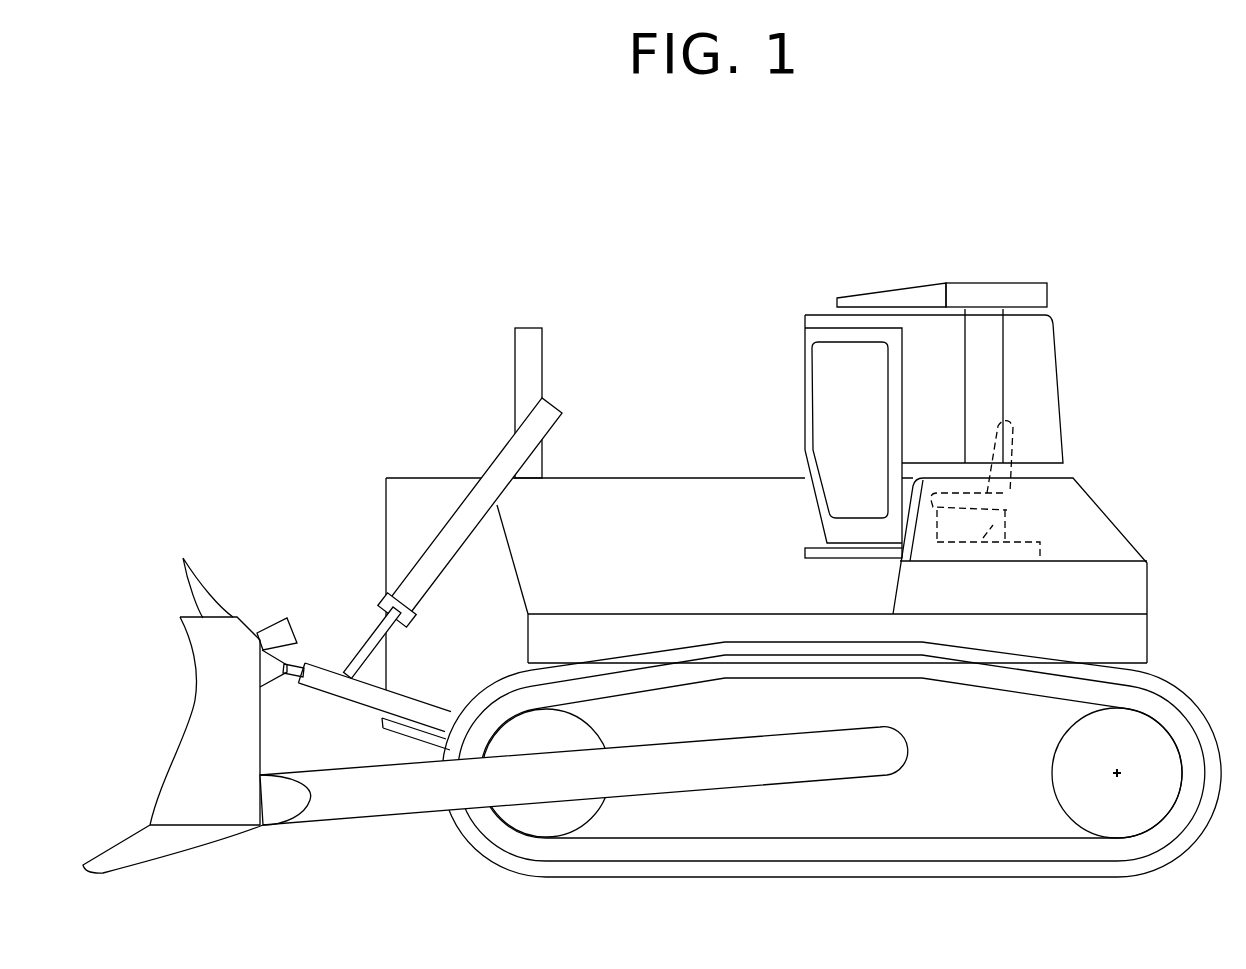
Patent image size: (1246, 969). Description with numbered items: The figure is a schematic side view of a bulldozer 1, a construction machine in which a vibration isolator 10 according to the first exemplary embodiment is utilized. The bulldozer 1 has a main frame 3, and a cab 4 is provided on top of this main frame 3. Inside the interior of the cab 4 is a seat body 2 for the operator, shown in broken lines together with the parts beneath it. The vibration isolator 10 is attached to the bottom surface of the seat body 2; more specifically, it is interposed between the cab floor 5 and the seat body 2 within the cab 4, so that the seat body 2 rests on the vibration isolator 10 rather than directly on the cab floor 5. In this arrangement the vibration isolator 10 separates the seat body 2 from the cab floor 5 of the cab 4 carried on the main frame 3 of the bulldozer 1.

The bulldozer 1 is at (377, 338).
The seat body 2 is at (1020, 427).
The main frame 3 is at (1137, 637).
The cab 4 is at (1048, 333).
The cab floor 5 is at (1010, 522).
The vibration isolator 10 is at (1000, 528).